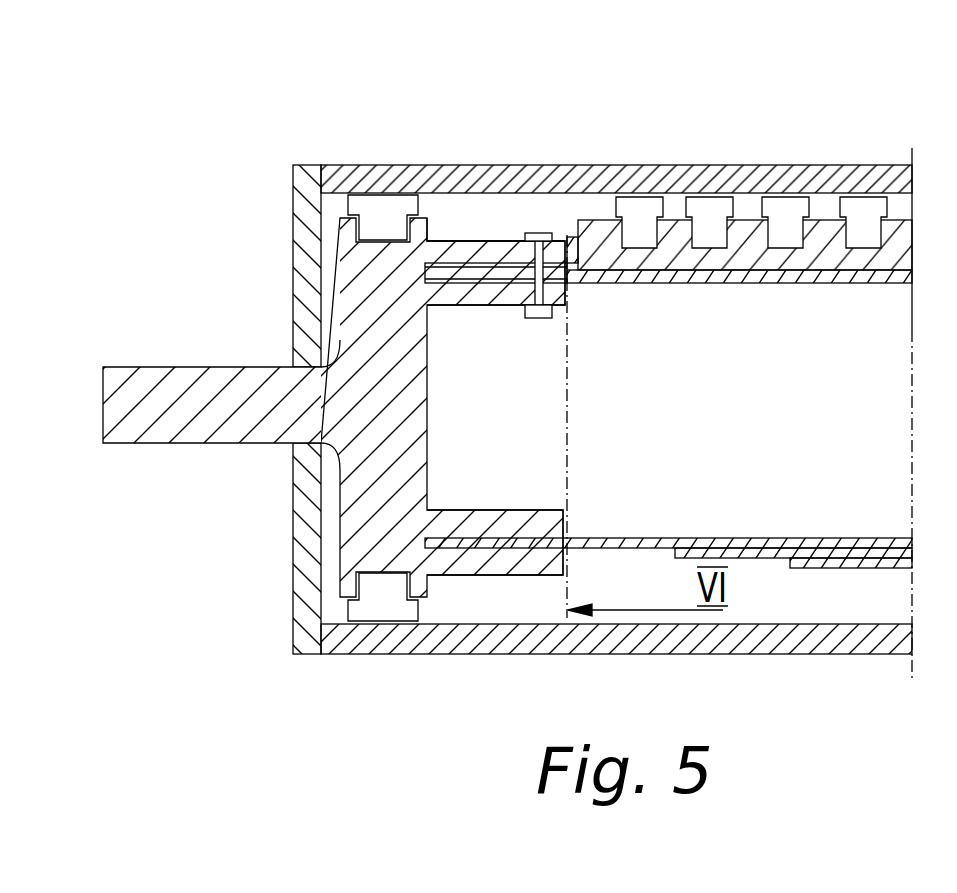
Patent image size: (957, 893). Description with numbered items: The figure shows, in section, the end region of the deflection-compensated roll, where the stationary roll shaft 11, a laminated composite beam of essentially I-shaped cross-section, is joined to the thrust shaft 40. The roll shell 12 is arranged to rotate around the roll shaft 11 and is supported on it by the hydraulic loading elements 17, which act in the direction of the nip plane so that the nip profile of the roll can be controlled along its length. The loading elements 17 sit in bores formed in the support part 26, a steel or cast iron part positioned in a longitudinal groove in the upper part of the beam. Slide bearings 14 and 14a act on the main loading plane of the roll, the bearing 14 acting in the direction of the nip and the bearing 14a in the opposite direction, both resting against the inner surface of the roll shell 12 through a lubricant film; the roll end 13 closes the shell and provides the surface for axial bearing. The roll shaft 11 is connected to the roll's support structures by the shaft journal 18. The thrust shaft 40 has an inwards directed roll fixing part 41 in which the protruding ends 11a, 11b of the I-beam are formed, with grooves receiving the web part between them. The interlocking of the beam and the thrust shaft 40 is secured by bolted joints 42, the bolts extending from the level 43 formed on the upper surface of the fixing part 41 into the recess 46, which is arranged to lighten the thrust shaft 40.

The roll shaft 11 is at (757, 283).
The protruding end of the I-beam 11a is at (463, 268).
The protruding end of the I-beam 11b is at (487, 540).
The roll shell 12 is at (622, 167).
The roll end 13 is at (297, 317).
The slide bearing 14 is at (377, 207).
The slide bearing 14a is at (390, 608).
The hydraulic loading element 17 is at (708, 208).
The shaft journal 18 is at (212, 420).
The support part 26 is at (672, 233).
The thrust shaft 40 is at (350, 260).
The roll fixing part 41 is at (462, 255).
The level 43 is at (490, 238).
The bolted joint 42 is at (538, 247).
The recess 46 is at (450, 448).